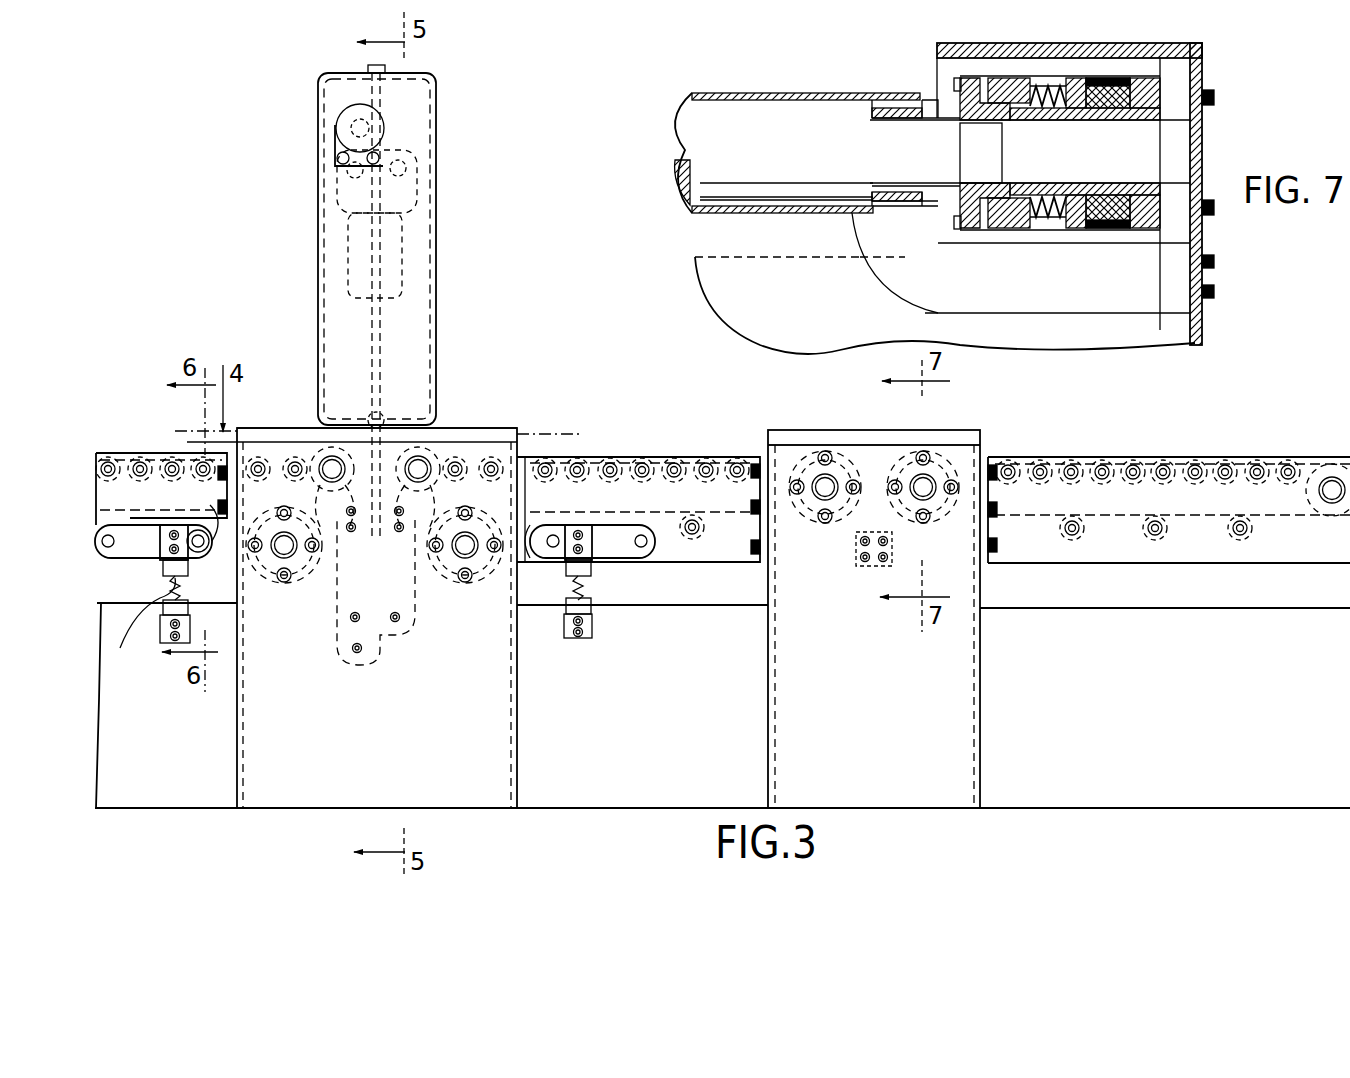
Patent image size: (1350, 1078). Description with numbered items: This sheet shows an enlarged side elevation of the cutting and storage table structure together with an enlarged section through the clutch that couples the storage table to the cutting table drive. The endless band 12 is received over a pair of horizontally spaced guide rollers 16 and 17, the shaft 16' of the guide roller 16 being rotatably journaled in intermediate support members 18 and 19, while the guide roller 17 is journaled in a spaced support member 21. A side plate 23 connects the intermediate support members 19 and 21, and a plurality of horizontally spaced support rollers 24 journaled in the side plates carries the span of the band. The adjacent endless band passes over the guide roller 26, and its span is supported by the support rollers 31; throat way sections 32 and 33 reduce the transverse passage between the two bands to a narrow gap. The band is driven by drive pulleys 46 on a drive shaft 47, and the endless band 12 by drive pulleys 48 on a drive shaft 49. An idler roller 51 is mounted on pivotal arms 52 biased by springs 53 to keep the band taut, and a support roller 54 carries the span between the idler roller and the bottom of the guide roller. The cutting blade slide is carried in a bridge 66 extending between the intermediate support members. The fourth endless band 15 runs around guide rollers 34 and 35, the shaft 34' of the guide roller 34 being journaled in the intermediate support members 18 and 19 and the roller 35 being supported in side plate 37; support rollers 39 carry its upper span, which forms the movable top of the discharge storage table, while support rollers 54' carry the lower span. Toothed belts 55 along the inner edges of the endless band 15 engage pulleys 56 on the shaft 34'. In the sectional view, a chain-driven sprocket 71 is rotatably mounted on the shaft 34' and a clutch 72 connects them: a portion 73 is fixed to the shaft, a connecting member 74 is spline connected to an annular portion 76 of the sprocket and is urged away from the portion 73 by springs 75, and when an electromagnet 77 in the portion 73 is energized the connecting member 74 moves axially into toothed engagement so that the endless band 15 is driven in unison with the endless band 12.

In FIG. 3, the endless band 12 is at (612, 458).
In FIG. 3, the endless band 15 is at (1195, 462).
In FIG. 7, the endless band 15 is at (772, 93).
In FIG. 3, the guide roller 16 is at (833, 474).
In FIG. 3, the shaft 16' is at (825, 509).
In FIG. 3, the guide roller 17 is at (475, 440).
In FIG. 7, the intermediate support member 18 is at (1216, 250).
In FIG. 3, the intermediate support member 19 is at (985, 678).
In FIG. 3, the intermediate support member 21 is at (519, 678).
In FIG. 3, the side plate 23 is at (660, 565).
In FIG. 3, the support rollers 24 is at (720, 457).
In FIG. 3, the guide roller 26 is at (312, 445).
In FIG. 3, the support rollers 31 is at (160, 452).
In FIG. 3, the throat way section 32 is at (358, 440).
In FIG. 3, the throat way section 33 is at (440, 440).
In FIG. 3, the guide roller 34 is at (899, 414).
In FIG. 7, the guide roller 34 is at (945, 238).
In FIG. 3, the shaft 34' is at (937, 453).
In FIG. 7, the shaft 34' is at (1062, 151).
In FIG. 3, the guide roller 35 is at (1320, 470).
In FIG. 3, the side plate 37 is at (1230, 566).
In FIG. 3, the support rollers 39 is at (1112, 466).
In FIG. 3, the drive pulleys 46 is at (310, 595).
In FIG. 3, the drive shaft 47 is at (280, 550).
In FIG. 3, the drive pulleys 48 is at (408, 560).
In FIG. 3, the drive shaft 49 is at (470, 550).
In FIG. 3, the idler roller 51 is at (197, 562).
In FIG. 3, the arms 52 is at (136, 558).
In FIG. 3, the springs 53 is at (137, 627).
In FIG. 3, the support roller 54 is at (711, 559).
In FIG. 3, the support rollers 54' is at (1156, 560).
In FIG. 7, the toothed belts 55 is at (880, 190).
In FIG. 7, the pulleys 56 is at (868, 98).
In FIG. 3, the bridge 66 is at (438, 275).
In FIG. 7, the sprocket 71 is at (950, 212).
In FIG. 7, the clutch 72 is at (1075, 232).
In FIG. 7, the portion 73 is at (1150, 95).
In FIG. 7, the connecting member 74 is at (1000, 230).
In FIG. 7, the springs 75 is at (1050, 85).
In FIG. 7, the annular portion 76 is at (972, 230).
In FIG. 7, the electromagnet 77 is at (1108, 232).